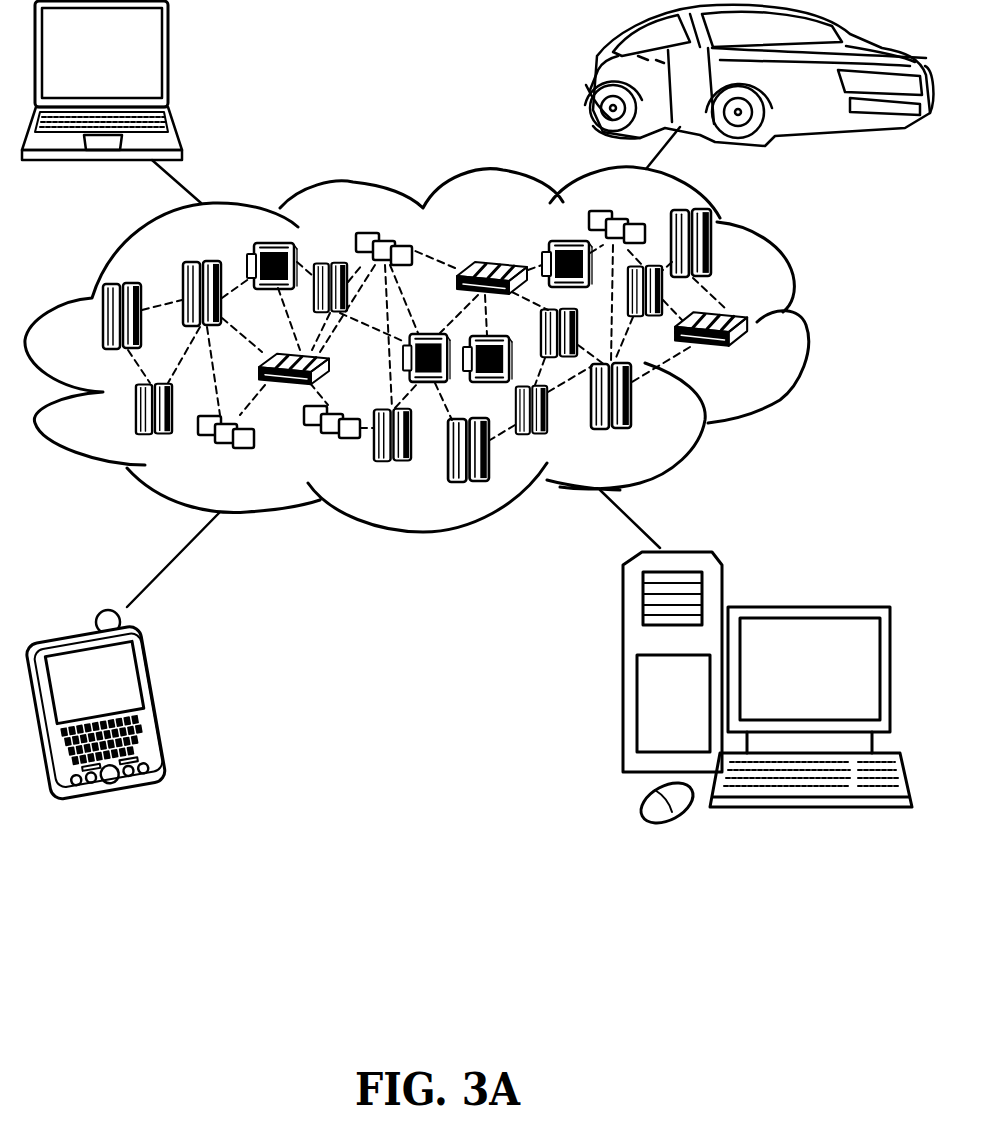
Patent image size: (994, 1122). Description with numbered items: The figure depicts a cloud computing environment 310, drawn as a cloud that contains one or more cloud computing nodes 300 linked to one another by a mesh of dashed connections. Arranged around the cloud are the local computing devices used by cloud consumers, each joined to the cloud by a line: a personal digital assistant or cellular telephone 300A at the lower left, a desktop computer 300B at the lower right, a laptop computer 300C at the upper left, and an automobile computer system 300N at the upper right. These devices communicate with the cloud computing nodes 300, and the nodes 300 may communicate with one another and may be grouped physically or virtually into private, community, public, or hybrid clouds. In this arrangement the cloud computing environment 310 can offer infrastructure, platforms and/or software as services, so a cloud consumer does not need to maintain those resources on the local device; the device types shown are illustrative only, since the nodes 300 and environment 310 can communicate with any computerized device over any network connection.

The cloud computing nodes 300 is at (756, 357).
The cloud computing environment 310 is at (806, 327).
The personal digital assistant (PDA) or cellular telephone 300A is at (158, 699).
The desktop computer 300B is at (807, 607).
The laptop computer 300C is at (168, 60).
The automobile computer system 300N is at (593, 78).